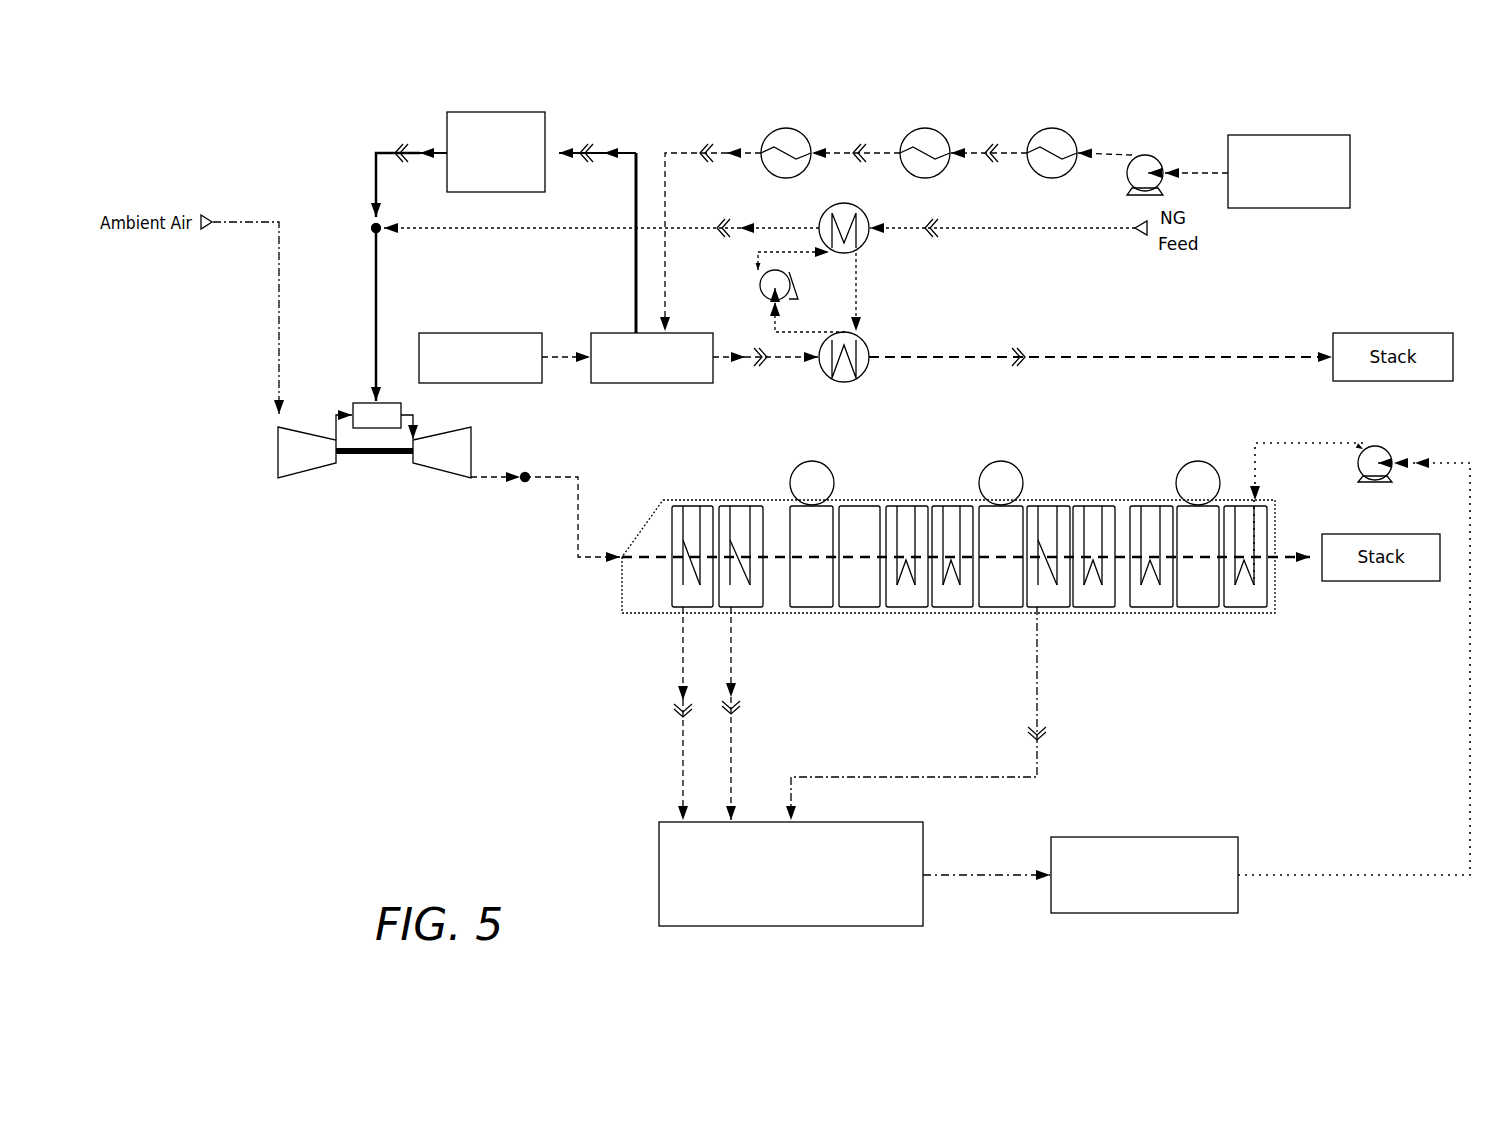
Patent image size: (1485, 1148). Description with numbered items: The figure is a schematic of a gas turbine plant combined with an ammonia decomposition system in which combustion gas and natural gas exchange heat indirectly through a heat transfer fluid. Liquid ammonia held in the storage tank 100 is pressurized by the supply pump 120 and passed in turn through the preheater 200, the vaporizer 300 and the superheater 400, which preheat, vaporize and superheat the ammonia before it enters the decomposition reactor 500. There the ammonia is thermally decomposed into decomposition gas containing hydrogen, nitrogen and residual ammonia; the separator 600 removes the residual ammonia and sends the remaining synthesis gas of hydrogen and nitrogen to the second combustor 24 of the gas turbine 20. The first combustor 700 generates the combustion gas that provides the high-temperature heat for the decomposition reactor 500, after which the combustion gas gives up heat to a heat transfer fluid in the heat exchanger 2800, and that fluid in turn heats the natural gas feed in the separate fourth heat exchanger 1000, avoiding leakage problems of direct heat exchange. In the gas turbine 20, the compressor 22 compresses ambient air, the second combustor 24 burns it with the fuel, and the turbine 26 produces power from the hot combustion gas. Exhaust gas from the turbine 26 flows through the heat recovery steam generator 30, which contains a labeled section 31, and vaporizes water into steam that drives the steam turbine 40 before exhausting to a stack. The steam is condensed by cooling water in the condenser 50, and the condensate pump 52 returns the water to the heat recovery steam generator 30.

The storage tank 100 is at (1275, 135).
The supply pump 120 is at (1148, 155).
The preheater 200 is at (1053, 128).
The vaporizer 300 is at (926, 128).
The superheater 400 is at (787, 128).
The decomposition reactor 500 is at (650, 383).
The separator 600 is at (491, 112).
The first combustor 700 is at (480, 333).
The fourth heat exchanger 1000 is at (830, 207).
The heat exchanger 2800 is at (854, 380).
The gas turbine 20 is at (374, 487).
The compressor 22 is at (310, 455).
The second combustor 24 is at (372, 420).
The turbine 26 is at (440, 455).
The heat recovery steam generator 30 is at (966, 593).
The selective catalytic reduction unit 31 is at (858, 506).
The steam turbine 40 is at (659, 875).
The condenser 50 is at (1148, 837).
The condensate pump 52 is at (1368, 447).